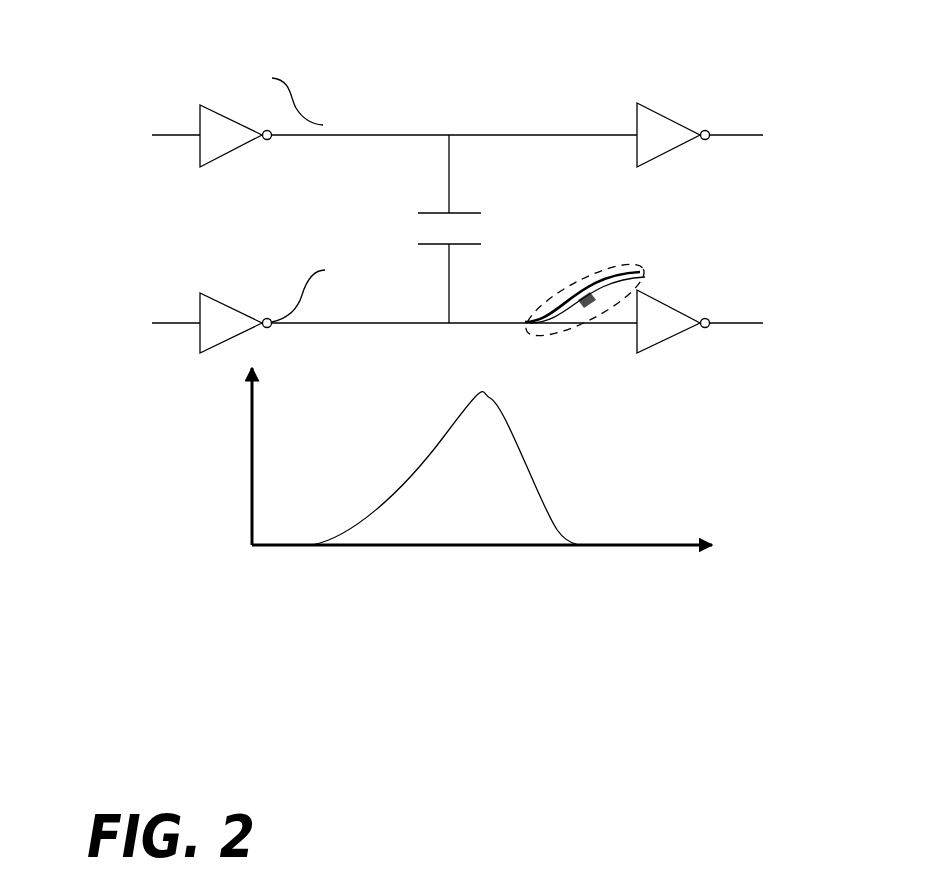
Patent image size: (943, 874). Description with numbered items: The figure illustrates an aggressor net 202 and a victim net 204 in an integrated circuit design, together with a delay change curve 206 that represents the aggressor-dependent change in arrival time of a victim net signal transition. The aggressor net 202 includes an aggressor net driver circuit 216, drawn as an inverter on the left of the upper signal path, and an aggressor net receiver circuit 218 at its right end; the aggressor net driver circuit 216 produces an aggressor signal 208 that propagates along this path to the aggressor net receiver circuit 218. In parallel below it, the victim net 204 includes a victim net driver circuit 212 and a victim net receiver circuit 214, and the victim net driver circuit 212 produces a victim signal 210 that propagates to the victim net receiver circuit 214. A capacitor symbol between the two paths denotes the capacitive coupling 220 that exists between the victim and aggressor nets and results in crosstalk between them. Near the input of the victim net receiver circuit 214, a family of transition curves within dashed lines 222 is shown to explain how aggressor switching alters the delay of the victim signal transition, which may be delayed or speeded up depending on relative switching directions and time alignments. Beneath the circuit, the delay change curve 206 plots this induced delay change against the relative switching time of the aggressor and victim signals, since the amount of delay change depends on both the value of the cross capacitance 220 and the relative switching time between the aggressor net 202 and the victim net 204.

The aggressor net 202 is at (553, 117).
The victim net 204 is at (703, 207).
The delay change curve 206 is at (210, 465).
The aggressor net signal 208 is at (297, 86).
The victim net signal 210 is at (304, 273).
The victim net driver circuit 212 is at (200, 293).
The victim net receiver circuit 214 is at (637, 290).
The aggressor net driver circuit 216 is at (200, 105).
The aggressor net receiver circuit 218 is at (637, 103).
The capacitive coupling 220 is at (437, 212).
The dashed lines 222 is at (557, 333).